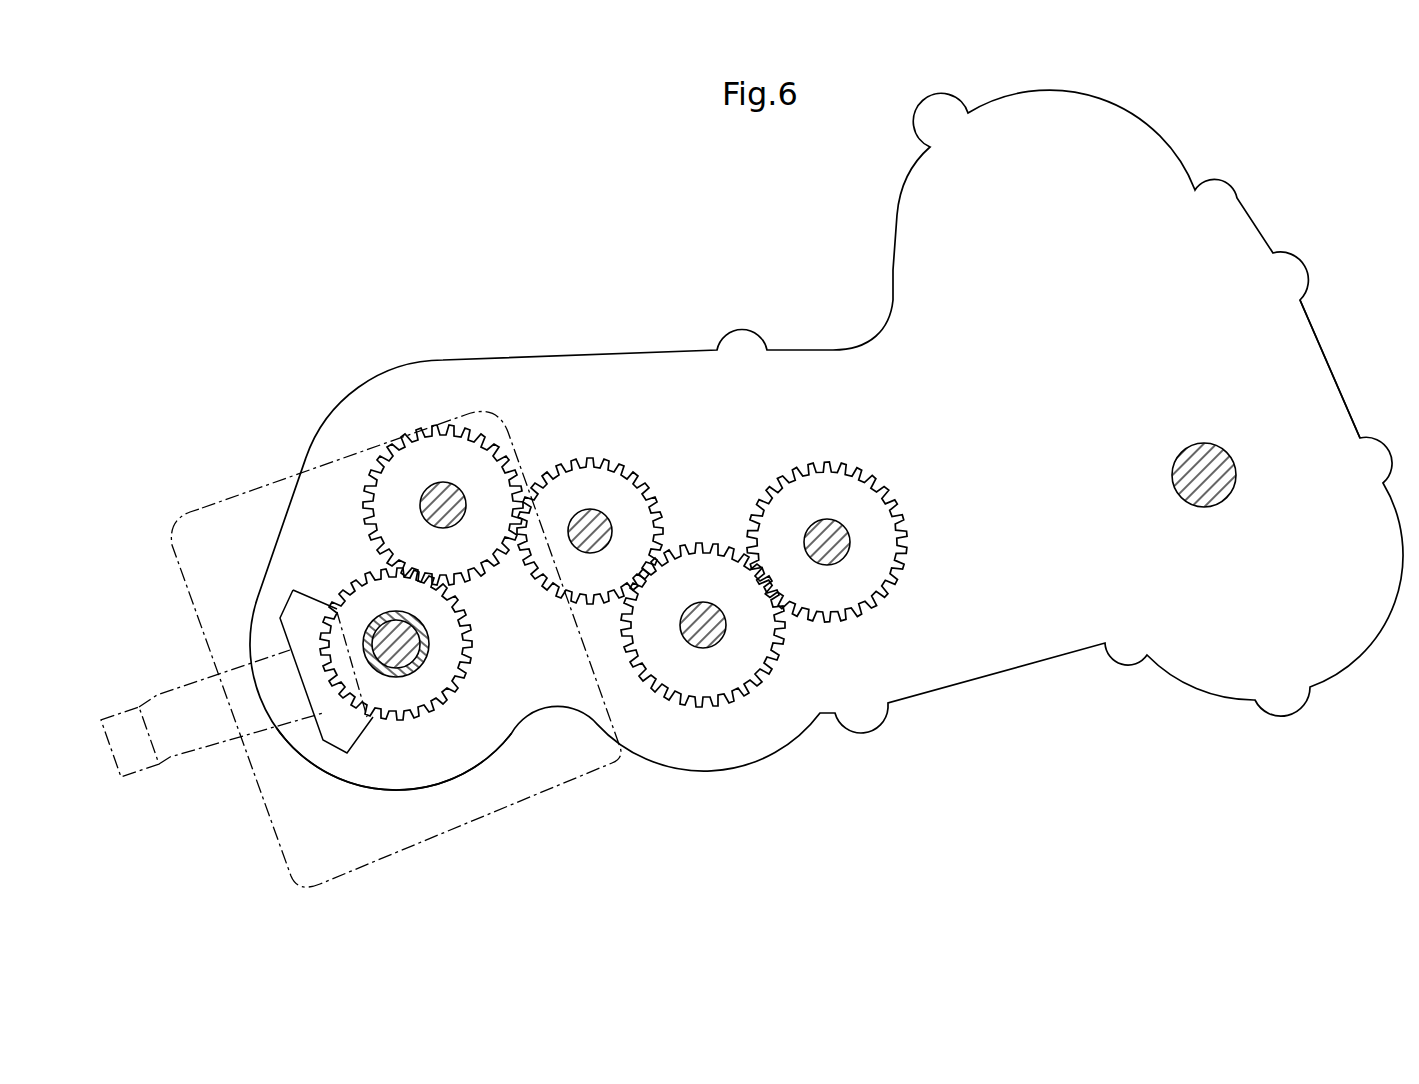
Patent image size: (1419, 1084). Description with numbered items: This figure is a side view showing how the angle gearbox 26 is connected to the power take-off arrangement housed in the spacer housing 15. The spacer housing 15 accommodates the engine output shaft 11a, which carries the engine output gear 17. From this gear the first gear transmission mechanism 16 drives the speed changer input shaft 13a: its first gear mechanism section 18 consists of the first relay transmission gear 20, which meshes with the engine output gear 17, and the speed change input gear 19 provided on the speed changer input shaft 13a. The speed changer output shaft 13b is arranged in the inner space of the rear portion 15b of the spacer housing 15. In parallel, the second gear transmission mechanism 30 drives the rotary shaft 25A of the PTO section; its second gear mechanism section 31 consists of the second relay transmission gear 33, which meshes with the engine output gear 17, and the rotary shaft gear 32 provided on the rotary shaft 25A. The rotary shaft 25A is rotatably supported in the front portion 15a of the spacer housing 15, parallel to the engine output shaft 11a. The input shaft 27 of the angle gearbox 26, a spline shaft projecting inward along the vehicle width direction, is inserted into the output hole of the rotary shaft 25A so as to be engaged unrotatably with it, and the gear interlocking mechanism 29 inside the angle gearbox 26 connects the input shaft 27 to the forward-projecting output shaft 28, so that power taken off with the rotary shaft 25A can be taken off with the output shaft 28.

The spacer housing 15 is at (660, 350).
The front portion of spacer housing 15a is at (419, 799).
The rear portion of spacer housing 15b is at (1328, 337).
The speed changer input shaft 13a is at (827, 540).
The speed changer output shaft 13b is at (1207, 478).
The engine output shaft 11a is at (593, 530).
The first gear transmission mechanism 16 is at (795, 588).
The engine output gear 17 is at (552, 560).
The first gear mechanism section 18 is at (803, 638).
The speed change input gear 19 is at (865, 567).
The first relay transmission gear 20 is at (733, 656).
The rotary shaft 25A is at (397, 643).
The angle gearbox 26 is at (202, 508).
The input shaft of angle gearbox 27 is at (420, 660).
The output shaft of angle gearbox 28 is at (168, 770).
The gear interlocking mechanism 29 is at (320, 752).
The second gear transmission mechanism 30 is at (399, 421).
The second gear mechanism section 31 is at (346, 551).
The rotary shaft gear 32 is at (392, 695).
The second relay transmission gear 33 is at (452, 465).